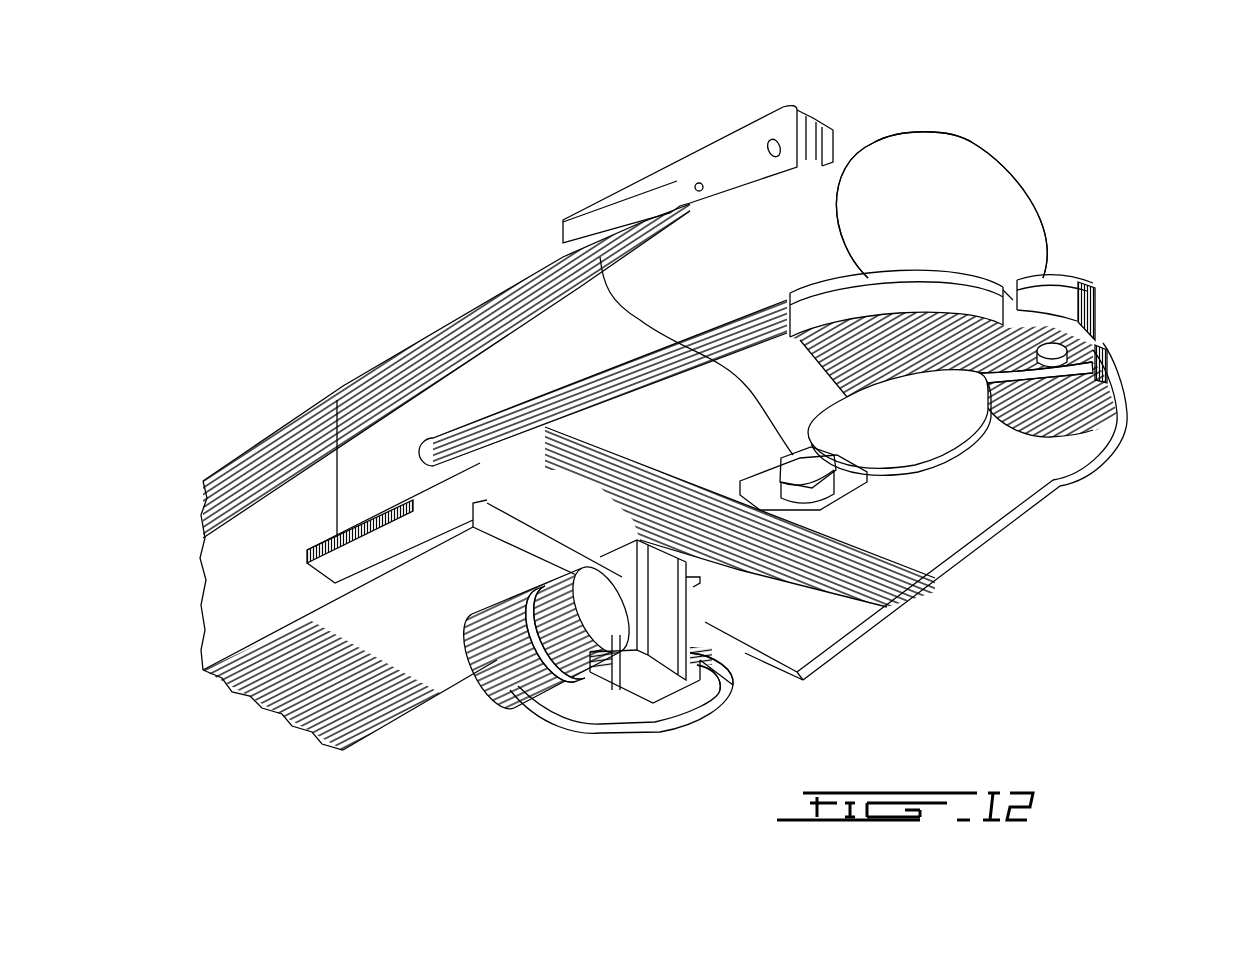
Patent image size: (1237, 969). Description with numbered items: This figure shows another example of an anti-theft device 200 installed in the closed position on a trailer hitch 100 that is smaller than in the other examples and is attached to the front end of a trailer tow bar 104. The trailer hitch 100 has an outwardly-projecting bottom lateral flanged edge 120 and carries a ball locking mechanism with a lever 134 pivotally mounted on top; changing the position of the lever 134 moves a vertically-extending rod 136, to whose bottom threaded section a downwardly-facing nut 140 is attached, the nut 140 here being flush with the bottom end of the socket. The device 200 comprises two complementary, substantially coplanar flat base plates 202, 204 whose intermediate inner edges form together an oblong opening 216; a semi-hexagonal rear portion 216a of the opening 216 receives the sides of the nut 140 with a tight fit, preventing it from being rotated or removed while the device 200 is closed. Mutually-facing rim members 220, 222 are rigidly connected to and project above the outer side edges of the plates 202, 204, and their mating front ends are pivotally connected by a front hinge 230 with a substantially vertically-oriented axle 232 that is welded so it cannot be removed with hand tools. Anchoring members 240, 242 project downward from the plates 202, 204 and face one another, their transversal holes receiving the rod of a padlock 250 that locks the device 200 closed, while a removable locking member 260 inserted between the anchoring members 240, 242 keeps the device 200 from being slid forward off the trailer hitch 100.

The trailer hitch 100 is at (951, 124).
The trailer tow bar 104 is at (260, 487).
The lateral flanged edge 120 is at (413, 497).
The lever 134 is at (723, 150).
The rod 136 is at (787, 522).
The nut 140 is at (813, 517).
The anti-theft device 200 is at (943, 593).
The base plate 202 is at (987, 507).
The base plate 204 is at (700, 410).
The opening 216 is at (928, 434).
The rear portion 216a is at (600, 257).
The rim member 220 is at (1104, 358).
The rim member 222 is at (890, 290).
The front hinge 230 is at (1097, 289).
The axle 232 is at (1055, 350).
The anchoring member 240 is at (700, 700).
The anchoring member 242 is at (607, 680).
The padlock 250 is at (497, 653).
The removable locking member 260 is at (643, 677).